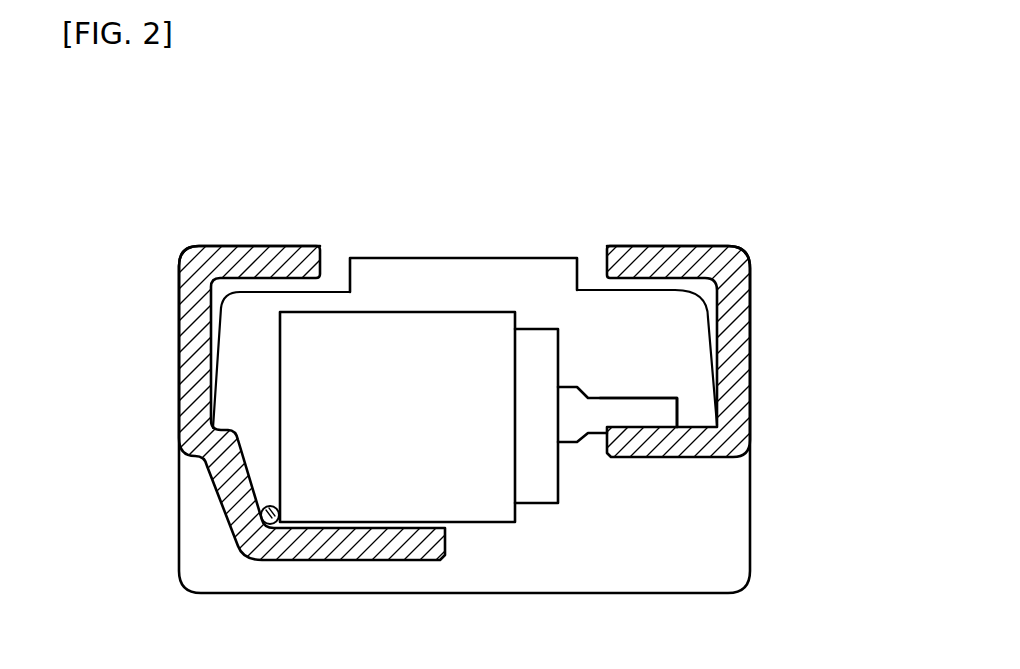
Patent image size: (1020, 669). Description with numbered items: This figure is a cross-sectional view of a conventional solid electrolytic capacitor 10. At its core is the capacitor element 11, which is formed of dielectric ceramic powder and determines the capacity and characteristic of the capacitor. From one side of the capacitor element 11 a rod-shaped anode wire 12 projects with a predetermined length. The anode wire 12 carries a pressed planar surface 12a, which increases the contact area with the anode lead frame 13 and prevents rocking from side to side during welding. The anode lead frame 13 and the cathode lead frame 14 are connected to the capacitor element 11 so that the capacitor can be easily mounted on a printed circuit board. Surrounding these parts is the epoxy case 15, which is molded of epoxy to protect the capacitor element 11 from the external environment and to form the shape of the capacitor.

The solid electrolytic capacitor 10 is at (760, 205).
The capacitor element 11 is at (388, 333).
The anode wire 12 is at (658, 403).
The planar surface 12a is at (615, 397).
The anode lead frame 13 is at (742, 398).
The cathode lead frame 14 is at (190, 410).
The epoxy case 15 is at (547, 283).